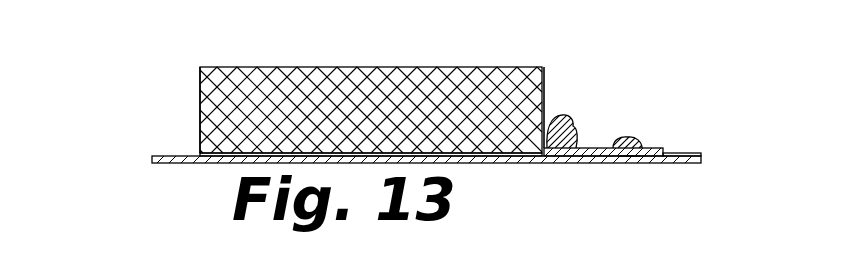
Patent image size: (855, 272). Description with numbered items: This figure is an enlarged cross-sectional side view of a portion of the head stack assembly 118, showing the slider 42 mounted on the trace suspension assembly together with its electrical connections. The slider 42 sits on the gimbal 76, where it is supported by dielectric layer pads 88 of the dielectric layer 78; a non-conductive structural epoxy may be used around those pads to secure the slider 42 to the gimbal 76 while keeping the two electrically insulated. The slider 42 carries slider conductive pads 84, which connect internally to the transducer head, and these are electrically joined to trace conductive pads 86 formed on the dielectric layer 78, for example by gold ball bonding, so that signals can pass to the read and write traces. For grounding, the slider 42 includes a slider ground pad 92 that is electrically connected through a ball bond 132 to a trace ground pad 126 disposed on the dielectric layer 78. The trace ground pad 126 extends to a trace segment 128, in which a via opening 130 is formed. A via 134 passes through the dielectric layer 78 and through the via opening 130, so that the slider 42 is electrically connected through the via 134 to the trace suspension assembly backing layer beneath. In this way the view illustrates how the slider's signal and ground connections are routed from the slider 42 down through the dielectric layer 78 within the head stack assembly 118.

The head stack assembly 118 is at (160, 83).
The slider 42 is at (292, 67).
The slider ground pad 92 is at (548, 98).
The dielectric layer pads 88 is at (200, 133).
The gimbal 76 is at (175, 158).
The dielectric layer 78 is at (678, 154).
The trace segment 128 is at (649, 142).
The slider conductive pads 84 is at (562, 75).
The via opening 130 is at (645, 127).
The ball bond 132 is at (594, 101).
The trace conductive pads 86 is at (617, 127).
The trace ground pad 126 is at (597, 143).
The via 134 is at (627, 158).